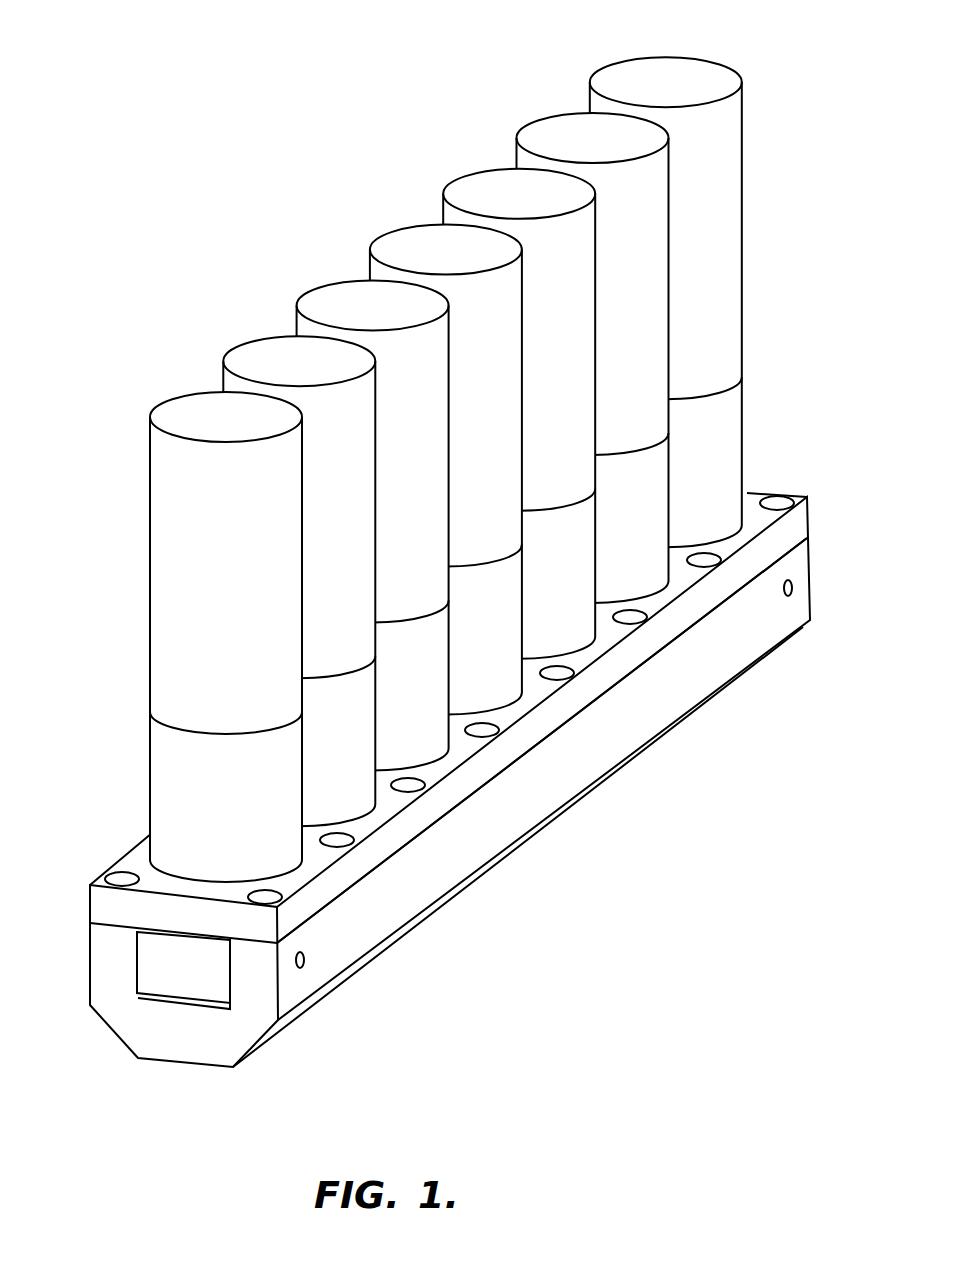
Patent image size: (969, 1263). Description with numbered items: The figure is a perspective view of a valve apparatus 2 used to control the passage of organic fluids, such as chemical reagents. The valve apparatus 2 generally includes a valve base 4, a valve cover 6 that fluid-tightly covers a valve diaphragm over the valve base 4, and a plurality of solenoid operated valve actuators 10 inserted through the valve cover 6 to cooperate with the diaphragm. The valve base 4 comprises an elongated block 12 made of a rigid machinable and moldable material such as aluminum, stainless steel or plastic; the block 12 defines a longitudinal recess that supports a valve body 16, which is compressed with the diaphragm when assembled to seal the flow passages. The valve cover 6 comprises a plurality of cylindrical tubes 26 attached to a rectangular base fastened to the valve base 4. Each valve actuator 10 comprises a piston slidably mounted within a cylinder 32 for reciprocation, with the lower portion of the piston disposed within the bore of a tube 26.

The valve apparatus 2 is at (433, 533).
The valve base 4 is at (75, 884).
The valve cover 6 is at (795, 485).
The solenoid operated valve actuator 10 is at (757, 290).
The elongated block 12 is at (102, 1017).
The valve body 16 is at (158, 958).
The cylindrical tube 26 is at (160, 760).
The cylinder 32 is at (165, 553).